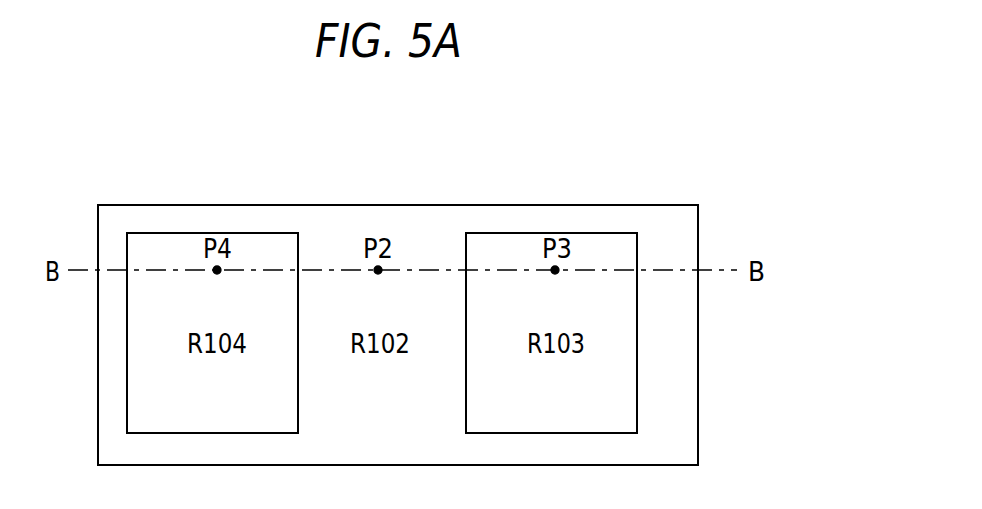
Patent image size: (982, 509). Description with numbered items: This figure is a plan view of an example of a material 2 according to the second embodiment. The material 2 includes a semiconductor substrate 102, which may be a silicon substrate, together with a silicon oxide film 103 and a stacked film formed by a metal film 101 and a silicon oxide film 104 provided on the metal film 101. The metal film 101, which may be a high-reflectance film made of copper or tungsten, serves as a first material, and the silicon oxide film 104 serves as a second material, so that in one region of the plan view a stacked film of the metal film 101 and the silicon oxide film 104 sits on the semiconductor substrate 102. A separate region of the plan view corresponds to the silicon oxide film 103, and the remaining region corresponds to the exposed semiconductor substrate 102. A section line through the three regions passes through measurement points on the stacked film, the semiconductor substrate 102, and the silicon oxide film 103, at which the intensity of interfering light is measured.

The material 2 is at (398, 273).
The metal film 101 is at (212, 294).
The semiconductor substrate 102 is at (367, 205).
The silicon oxide film 103 is at (518, 233).
The silicon oxide film 104 is at (188, 233).